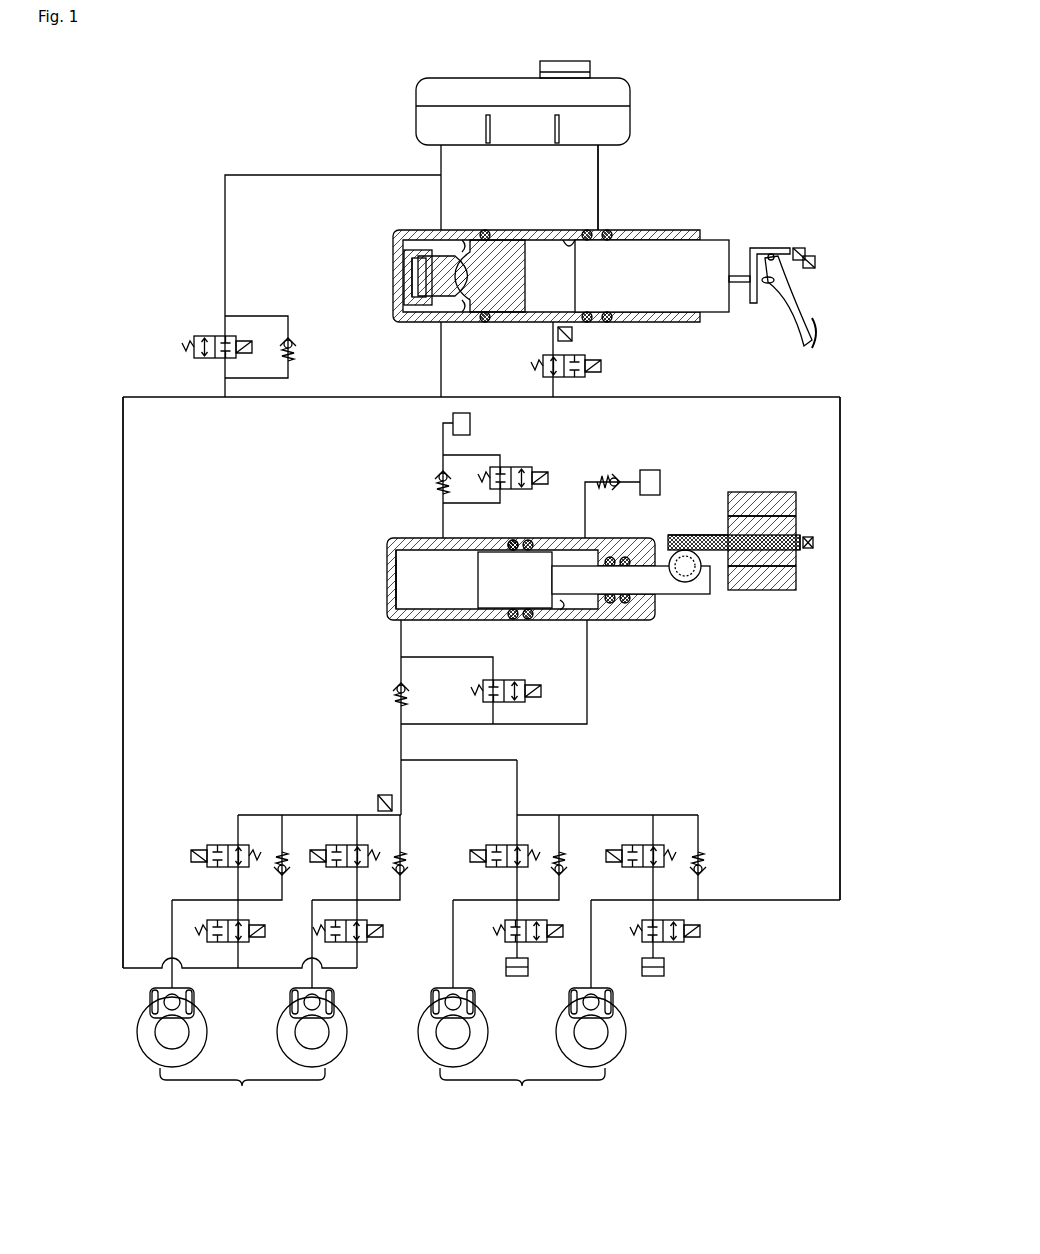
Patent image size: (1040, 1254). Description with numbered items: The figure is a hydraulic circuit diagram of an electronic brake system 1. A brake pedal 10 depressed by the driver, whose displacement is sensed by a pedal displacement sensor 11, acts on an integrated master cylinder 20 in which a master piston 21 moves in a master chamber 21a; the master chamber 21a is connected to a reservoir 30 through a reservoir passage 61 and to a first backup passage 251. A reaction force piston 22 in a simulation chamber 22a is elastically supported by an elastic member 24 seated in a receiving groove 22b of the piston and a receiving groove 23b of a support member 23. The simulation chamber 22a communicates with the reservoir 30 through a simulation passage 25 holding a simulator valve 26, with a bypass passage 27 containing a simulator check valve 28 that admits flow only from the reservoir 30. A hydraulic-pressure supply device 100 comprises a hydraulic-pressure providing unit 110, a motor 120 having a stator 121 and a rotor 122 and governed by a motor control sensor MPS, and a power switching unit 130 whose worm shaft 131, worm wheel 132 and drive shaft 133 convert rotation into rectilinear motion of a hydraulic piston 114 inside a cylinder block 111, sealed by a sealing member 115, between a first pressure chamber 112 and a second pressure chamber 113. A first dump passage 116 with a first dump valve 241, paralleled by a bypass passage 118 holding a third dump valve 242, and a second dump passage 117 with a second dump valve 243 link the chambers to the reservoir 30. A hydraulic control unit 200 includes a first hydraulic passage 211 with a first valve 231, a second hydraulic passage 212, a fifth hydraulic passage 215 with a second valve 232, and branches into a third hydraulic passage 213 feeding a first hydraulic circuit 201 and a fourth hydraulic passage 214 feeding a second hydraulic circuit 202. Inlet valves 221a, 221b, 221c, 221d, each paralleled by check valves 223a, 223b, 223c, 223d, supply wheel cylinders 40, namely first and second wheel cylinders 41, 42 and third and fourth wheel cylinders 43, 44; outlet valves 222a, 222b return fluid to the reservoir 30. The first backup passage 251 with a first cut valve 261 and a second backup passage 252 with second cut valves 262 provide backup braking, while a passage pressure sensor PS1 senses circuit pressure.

The electronic brake system 1 is at (337, 85).
The brake pedal 10 is at (786, 310).
The pedal displacement sensor 11 is at (815, 258).
The integrated master cylinder 20 is at (393, 238).
The master piston 21 is at (712, 240).
The master chamber 21a is at (568, 240).
The reaction force piston 22 is at (500, 322).
The simulation chamber 22a is at (464, 240).
The receiving groove 22b is at (470, 312).
The support member 23 is at (424, 322).
The receiving groove 23b is at (408, 280).
The elastic member 24 is at (440, 258).
The simulation passage 25 is at (225, 218).
The simulator valve 26 is at (205, 336).
The bypass passage 27 is at (240, 316).
The simulator check valve 28 is at (296, 346).
The reservoir 30 is at (417, 115).
The wheel cylinders 40 is at (712, 1090).
The first wheel cylinder 41 is at (595, 985).
The second wheel cylinder 42 is at (456, 985).
The third wheel cylinder 43 is at (347, 1036).
The fourth wheel cylinder 44 is at (207, 1036).
The reservoir passage 61 is at (598, 190).
The hydraulic-pressure supply device 100 is at (322, 506).
The hydraulic-pressure providing unit 110 is at (368, 549).
The cylinder block 111 is at (396, 578).
The first pressure chamber 112 is at (405, 590).
The second pressure chamber 113 is at (552, 620).
The hydraulic piston 114 is at (535, 552).
The sealing member 115 is at (512, 540).
The first dump passage 116 is at (443, 530).
The second dump passage 117 is at (585, 520).
The bypass passage 118 is at (480, 455).
The motor 120 is at (765, 479).
The stator 121 is at (752, 590).
The rotor 122 is at (796, 575).
The power switching unit 130 is at (711, 516).
The worm shaft 131 is at (680, 535).
The worm wheel 132 is at (690, 580).
The drive shaft 133 is at (670, 594).
The motor control sensor MPS is at (811, 528).
The hydraulic control unit 200 is at (371, 1089).
The first hydraulic circuit 201 is at (522, 1087).
The second hydraulic circuit 202 is at (242, 1087).
The first hydraulic passage 211 is at (401, 650).
The second hydraulic passage 212 is at (587, 686).
The third hydraulic passage 213 is at (517, 768).
The fourth hydraulic passage 214 is at (401, 760).
The fifth hydraulic passage 215 is at (460, 657).
The first inlet valve 221a is at (641, 845).
The second inlet valve 221b is at (505, 845).
The third inlet valve 221c is at (345, 845).
The fourth inlet valve 221d is at (226, 845).
The first outlet valve 222a is at (678, 942).
The second outlet valve 222b is at (541, 942).
The check valve 223a is at (706, 868).
The check valve 223b is at (567, 868).
The check valve 223c is at (408, 868).
The check valve 223d is at (290, 868).
The first valve 231 is at (395, 692).
The second valve 232 is at (508, 680).
The first dump valve 241 is at (436, 478).
The third dump valve 242 is at (515, 467).
The second dump valve 243 is at (615, 474).
The first backup passage 251 is at (840, 693).
The second backup passage 252 is at (123, 640).
The first cut valve 261 is at (585, 366).
The second cut valve 262 is at (249, 940).
The passage pressure sensor PS1 is at (378, 803).